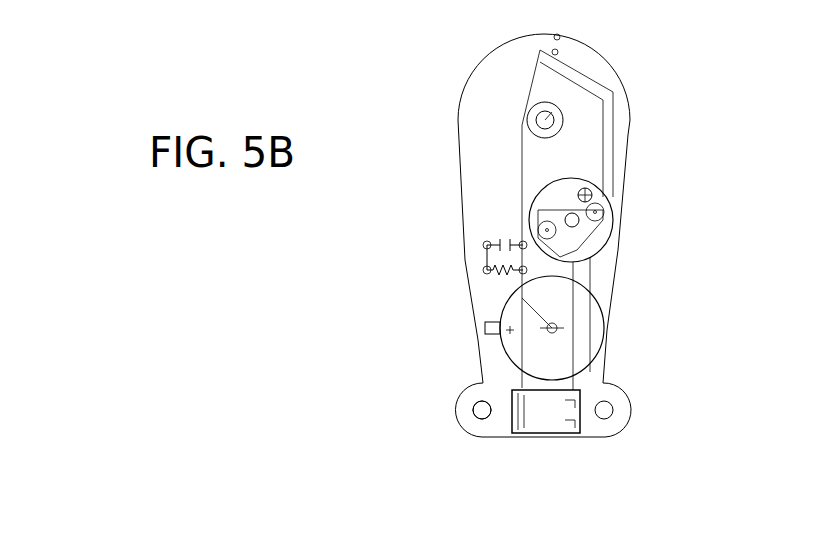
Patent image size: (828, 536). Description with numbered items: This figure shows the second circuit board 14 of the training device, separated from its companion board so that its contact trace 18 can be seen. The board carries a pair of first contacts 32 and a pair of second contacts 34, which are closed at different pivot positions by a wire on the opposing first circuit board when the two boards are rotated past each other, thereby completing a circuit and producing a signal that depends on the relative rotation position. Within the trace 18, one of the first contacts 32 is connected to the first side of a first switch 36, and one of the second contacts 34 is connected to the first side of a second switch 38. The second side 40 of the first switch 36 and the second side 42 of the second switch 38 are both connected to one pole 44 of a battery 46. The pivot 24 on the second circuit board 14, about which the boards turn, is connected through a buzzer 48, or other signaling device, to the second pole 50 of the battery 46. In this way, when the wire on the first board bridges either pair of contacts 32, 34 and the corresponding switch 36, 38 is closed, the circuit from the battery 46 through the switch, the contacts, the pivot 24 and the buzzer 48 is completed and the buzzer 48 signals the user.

The second circuit board 14 is at (633, 125).
The contact trace 18 is at (518, 193).
The pivot 24 is at (533, 123).
The first contacts 32 is at (535, 42).
The second contacts 34 is at (563, 62).
The first switch 36 is at (563, 407).
The second switch 38 is at (562, 423).
The second side of first switch 40 is at (503, 407).
The second side of second switch 42 is at (513, 422).
The pole of battery 44 is at (493, 335).
The battery 46 is at (598, 355).
The buzzer 48 is at (563, 40).
The second pole of battery 50 is at (556, 337).